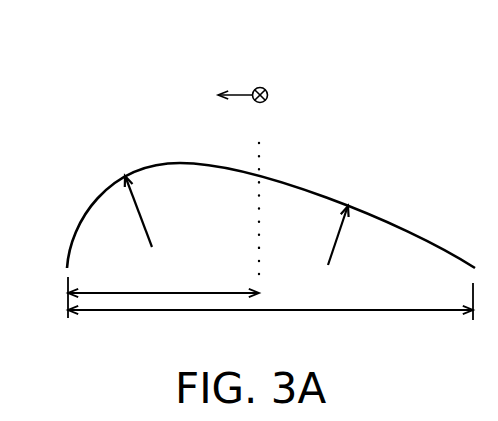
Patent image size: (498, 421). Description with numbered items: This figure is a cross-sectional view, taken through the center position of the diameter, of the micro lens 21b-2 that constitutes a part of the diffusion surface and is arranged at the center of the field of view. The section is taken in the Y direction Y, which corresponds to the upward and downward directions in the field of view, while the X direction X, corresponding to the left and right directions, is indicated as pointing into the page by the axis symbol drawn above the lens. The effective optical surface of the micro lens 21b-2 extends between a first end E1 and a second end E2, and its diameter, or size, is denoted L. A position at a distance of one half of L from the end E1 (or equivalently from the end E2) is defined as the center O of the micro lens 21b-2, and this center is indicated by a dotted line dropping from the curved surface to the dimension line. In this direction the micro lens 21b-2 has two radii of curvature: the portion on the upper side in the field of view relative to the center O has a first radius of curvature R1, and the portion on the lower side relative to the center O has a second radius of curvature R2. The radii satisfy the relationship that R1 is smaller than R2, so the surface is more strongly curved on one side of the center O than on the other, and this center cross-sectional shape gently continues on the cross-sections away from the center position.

The micro lens 21b-2 is at (372, 218).
The first radius of curvature R1 is at (130, 211).
The second radius of curvature R2 is at (351, 238).
The end E1 is at (74, 313).
The end E2 is at (477, 316).
The diameter of the effective optical surface L is at (196, 263).
The center of the micro lens O is at (272, 225).
The X direction X is at (275, 95).
The Y direction Y is at (221, 95).